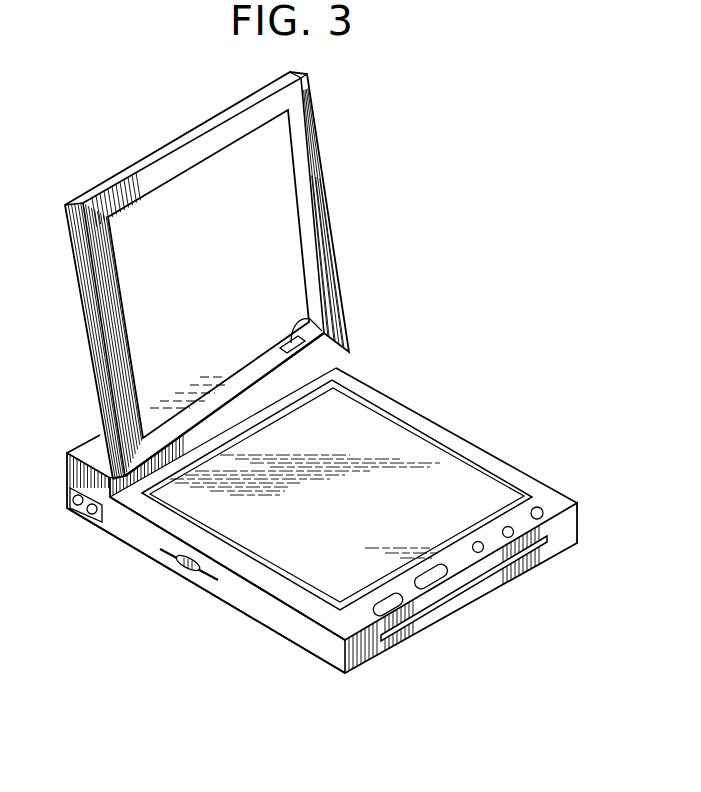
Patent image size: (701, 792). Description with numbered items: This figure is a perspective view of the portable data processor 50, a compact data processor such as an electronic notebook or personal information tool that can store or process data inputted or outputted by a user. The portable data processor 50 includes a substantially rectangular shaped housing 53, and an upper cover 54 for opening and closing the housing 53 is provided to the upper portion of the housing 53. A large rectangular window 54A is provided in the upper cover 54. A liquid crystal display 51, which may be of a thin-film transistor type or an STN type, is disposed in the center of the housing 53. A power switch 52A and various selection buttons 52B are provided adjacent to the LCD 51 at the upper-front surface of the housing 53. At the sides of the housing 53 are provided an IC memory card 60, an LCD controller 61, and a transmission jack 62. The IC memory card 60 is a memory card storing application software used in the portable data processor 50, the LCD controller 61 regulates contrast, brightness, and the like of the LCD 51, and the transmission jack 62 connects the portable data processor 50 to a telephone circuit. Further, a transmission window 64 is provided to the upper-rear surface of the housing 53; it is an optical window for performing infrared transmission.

The portable data processor 50 is at (125, 567).
The liquid crystal display 51 is at (412, 448).
The power switch 52A is at (543, 507).
The selection buttons 52B is at (393, 607).
The housing 53 is at (280, 622).
The upper cover 54 is at (328, 243).
The rectangular window 54A is at (291, 150).
The IC memory card 60 is at (548, 541).
The LCD controller 61 is at (197, 575).
The transmission jack 62 is at (82, 513).
The transmission window 64 is at (303, 320).